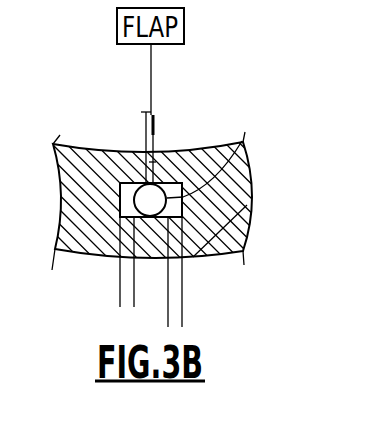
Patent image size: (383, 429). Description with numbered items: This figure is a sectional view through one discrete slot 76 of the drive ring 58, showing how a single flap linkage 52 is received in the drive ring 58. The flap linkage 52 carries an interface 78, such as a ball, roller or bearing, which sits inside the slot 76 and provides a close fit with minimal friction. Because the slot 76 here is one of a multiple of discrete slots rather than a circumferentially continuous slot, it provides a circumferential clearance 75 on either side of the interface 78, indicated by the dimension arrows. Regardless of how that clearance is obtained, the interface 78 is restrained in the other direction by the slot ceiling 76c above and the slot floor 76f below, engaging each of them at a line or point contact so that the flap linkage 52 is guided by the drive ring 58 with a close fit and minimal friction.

The flap linkage 52 is at (162, 126).
The drive ring 58 is at (256, 207).
The circumferential clearance 75 is at (112, 298).
The slot 76 is at (245, 160).
The slot ceiling 76c is at (183, 183).
The slot floor 76f is at (160, 217).
The interface 78 is at (134, 198).